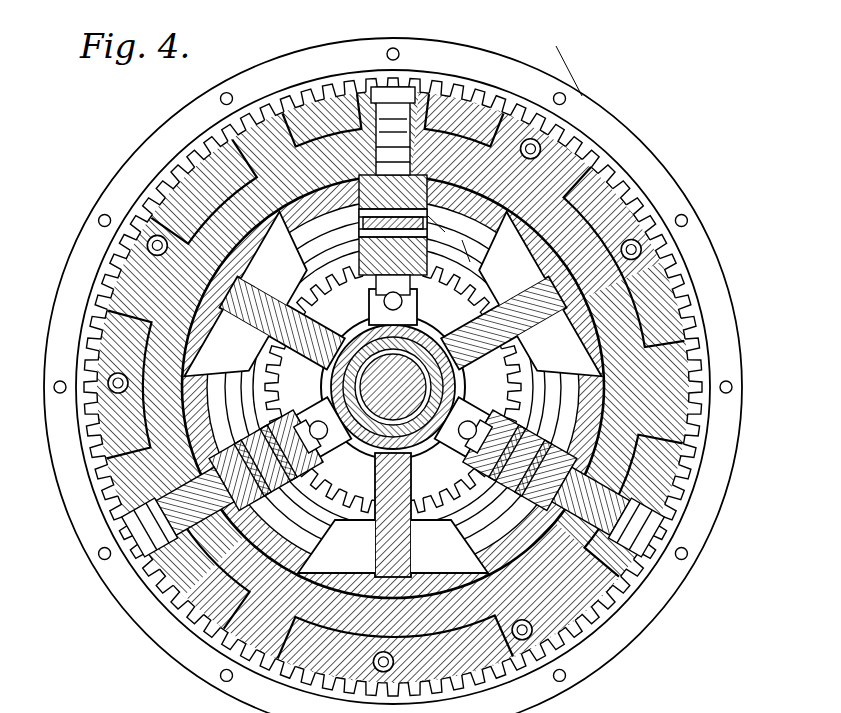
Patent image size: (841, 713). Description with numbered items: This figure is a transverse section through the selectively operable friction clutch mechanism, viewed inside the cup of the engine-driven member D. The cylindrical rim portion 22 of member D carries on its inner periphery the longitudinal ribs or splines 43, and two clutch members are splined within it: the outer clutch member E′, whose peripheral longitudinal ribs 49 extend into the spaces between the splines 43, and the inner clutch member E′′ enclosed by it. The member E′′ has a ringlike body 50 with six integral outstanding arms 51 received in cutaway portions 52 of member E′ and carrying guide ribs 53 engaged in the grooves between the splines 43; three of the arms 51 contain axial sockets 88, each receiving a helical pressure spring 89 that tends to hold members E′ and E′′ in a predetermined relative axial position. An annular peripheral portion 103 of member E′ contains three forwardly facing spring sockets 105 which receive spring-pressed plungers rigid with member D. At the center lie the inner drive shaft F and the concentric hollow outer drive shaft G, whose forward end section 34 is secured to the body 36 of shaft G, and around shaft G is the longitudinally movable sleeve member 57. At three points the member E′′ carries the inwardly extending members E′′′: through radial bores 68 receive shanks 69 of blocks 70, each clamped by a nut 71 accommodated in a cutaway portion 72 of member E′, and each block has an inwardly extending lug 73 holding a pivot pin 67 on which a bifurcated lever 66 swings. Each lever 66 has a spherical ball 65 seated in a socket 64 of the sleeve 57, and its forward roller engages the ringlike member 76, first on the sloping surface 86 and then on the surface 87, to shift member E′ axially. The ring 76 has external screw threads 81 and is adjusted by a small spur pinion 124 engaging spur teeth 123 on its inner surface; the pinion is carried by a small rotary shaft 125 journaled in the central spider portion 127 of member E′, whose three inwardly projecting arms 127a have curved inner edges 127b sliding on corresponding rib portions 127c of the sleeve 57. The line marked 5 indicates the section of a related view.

The cylindrical rim portion 22 is at (597, 147).
The longitudinal ribs or splines 43 is at (603, 180).
The longitudinal ribs 49 is at (620, 200).
The body 50 is at (172, 158).
The outstanding arms 51 is at (272, 102).
The cutaway portions 52 is at (212, 190).
The guide ribs 53 is at (262, 96).
The spring sockets 105 is at (663, 250).
The annular peripheral portion 103 is at (667, 310).
The helical pressure spring 89 is at (600, 632).
The axial sockets 88 is at (545, 670).
The engine-driven member D is at (86, 237).
The ringlike member 76 is at (490, 270).
The inner drive shaft F is at (392, 394).
The inwardly extending lug 73 is at (375, 283).
The external screw threads 81 is at (548, 399).
The sloping surface 86 is at (522, 400).
The surface 87 is at (534, 423).
The body of shaft G 36 is at (466, 407).
The concentric hollow outer drive shaft G is at (458, 391).
The forward end section 34 is at (468, 370).
The sleeve member 57 is at (478, 333).
The central spider portion 127 is at (415, 540).
The inwardly projecting arms 127a is at (276, 328).
The curved inner edges 127b is at (356, 302).
The rib portions 127c is at (312, 378).
The small rotary shaft 125 is at (378, 530).
The nut 71 is at (388, 88).
The cutaway portion 72 is at (378, 92).
The levers 66 is at (360, 248).
The pivot pins 67 is at (376, 236).
The cutaway portions or sockets 64 is at (408, 308).
The spherical members or balls 65 is at (404, 292).
The shanks 69 is at (438, 100).
The through radial bores 68 is at (452, 108).
The blocks 70 is at (465, 100).
The section line 5 is at (505, 142).
The inwardly extending members E′′′ is at (244, 514).
The inner clutch member E′′ is at (118, 350).
The outer clutch member E′ is at (97, 290).
The spur teeth 123 is at (312, 445).
The small spur pinion 124 is at (372, 492).